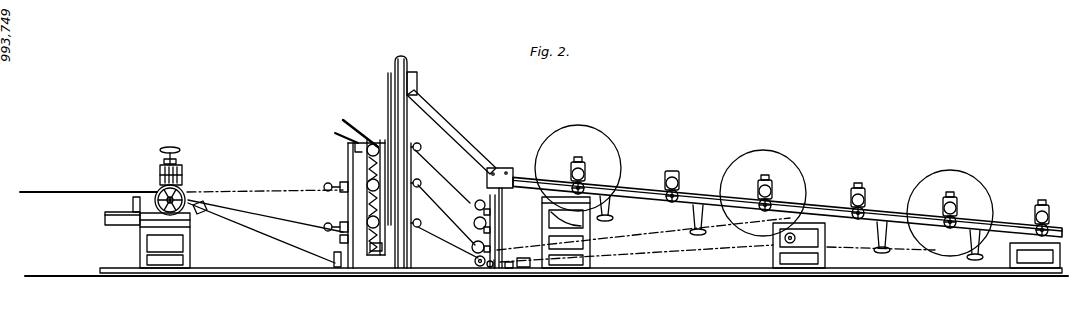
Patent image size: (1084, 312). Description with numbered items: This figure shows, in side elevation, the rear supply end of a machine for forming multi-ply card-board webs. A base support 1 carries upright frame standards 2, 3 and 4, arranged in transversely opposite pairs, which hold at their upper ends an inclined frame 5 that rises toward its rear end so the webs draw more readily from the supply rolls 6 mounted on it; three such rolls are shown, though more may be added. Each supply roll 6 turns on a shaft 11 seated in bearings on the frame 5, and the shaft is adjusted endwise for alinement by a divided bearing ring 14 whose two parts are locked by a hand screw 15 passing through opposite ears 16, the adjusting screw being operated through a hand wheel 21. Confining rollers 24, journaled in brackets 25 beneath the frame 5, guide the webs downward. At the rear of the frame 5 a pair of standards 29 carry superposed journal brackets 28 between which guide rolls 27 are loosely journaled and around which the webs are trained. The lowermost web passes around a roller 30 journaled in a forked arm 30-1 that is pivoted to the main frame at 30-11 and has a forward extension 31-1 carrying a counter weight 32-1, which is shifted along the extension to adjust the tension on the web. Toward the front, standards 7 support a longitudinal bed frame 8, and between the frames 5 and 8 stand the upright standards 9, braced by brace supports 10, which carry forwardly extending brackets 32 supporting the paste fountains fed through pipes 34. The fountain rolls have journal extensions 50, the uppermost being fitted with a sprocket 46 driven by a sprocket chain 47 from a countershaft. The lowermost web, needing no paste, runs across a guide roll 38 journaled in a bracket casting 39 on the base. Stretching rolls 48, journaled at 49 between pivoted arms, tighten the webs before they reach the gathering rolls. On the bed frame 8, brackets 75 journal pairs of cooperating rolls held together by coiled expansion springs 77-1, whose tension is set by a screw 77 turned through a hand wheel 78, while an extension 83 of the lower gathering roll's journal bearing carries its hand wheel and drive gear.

The base support 1 is at (729, 271).
The upright frame standard 2 is at (590, 247).
The upright frame standard 3 is at (825, 258).
The upright frame standard 4 is at (1010, 262).
The inclined frame 5 is at (884, 210).
The supply roll 6 is at (612, 142).
The standard 7 is at (190, 247).
The bed frame 8 is at (105, 218).
The upright standard 9 is at (410, 60).
The brace support 10 is at (433, 114).
The shaft 11 is at (571, 172).
The divided bearing ring 14 is at (586, 177).
The hand screw 15 is at (865, 190).
The ear 16 is at (763, 176).
The hand wheel 21 is at (586, 186).
The confining roller 24 is at (988, 255).
The bracket 25 is at (703, 226).
The guide roll 27 is at (475, 203).
The journal bracket 28 is at (490, 230).
The standard 29 is at (490, 212).
The roller 30 is at (477, 264).
The forked arm 30-1 is at (489, 268).
The pivot 30-11 is at (494, 270).
The extension 31-1 is at (510, 270).
The bracket 32 is at (377, 252).
The counter weight 32-1 is at (530, 266).
The pipe 34 is at (386, 88).
The guide roll 38 is at (352, 270).
The bracket casting 39 is at (335, 268).
The sprocket 46 is at (345, 134).
The sprocket chain 47 is at (353, 126).
The stretching roll 48 is at (325, 186).
The journal 49 is at (339, 239).
The journal extension 50 is at (373, 140).
The bracket 75 is at (184, 191).
The screw 77 is at (162, 161).
The coiled expansion spring 77-1 is at (160, 175).
The hand wheel 78 is at (177, 148).
The extension 83 is at (205, 212).